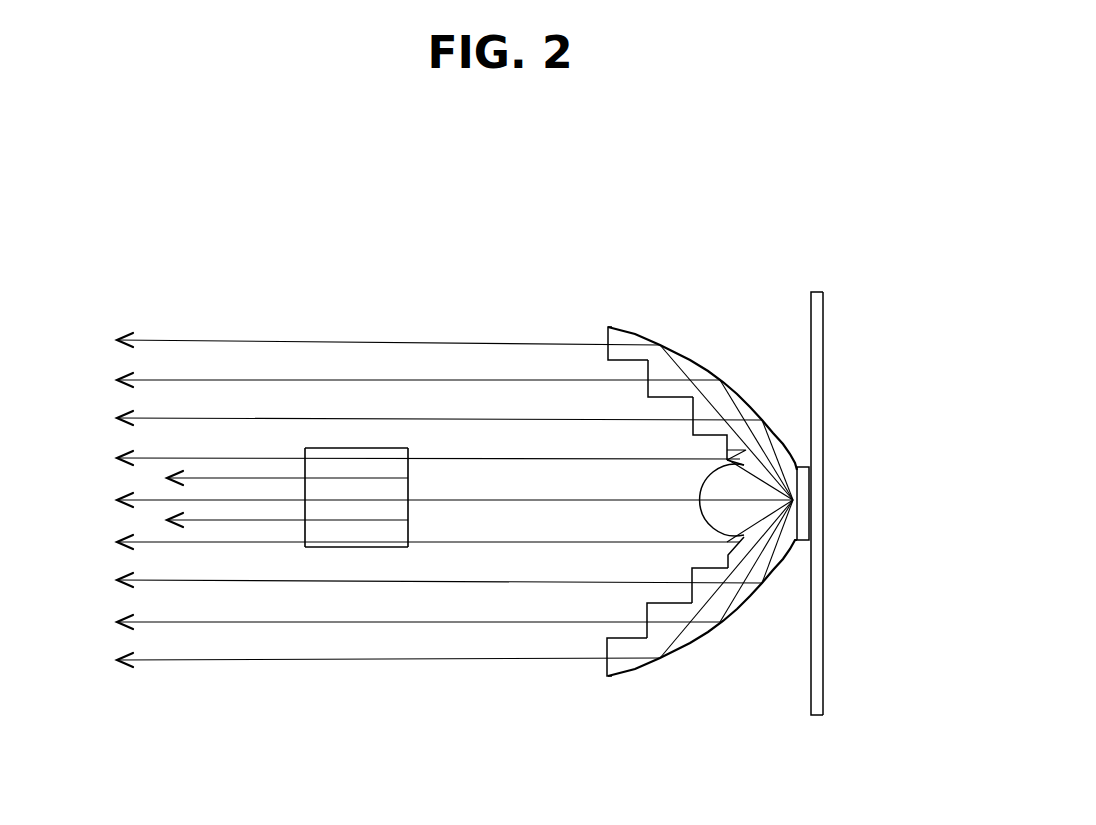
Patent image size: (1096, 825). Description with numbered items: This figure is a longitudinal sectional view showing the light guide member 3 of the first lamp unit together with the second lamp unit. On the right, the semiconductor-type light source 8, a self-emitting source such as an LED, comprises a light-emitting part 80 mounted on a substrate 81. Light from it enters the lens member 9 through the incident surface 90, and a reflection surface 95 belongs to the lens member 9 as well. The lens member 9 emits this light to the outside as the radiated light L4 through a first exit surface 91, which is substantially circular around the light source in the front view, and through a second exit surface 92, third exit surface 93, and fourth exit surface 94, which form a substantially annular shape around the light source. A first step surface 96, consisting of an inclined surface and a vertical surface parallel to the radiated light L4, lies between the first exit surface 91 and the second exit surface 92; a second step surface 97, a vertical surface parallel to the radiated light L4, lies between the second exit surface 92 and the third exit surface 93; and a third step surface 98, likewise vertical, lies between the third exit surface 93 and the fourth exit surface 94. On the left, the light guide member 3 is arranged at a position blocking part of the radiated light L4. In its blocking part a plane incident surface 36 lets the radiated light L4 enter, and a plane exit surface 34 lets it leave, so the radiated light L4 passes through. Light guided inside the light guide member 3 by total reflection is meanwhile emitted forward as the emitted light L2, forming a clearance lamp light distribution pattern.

The light guide member 3 is at (343, 440).
The plane exit surface 34 is at (306, 469).
The plane incident surface 36 is at (410, 467).
The semiconductor-type light source 8 is at (826, 272).
The light-emitting part 80 is at (810, 462).
The substrate 81 is at (825, 307).
The lens member 9 is at (699, 650).
The incident surface 90 is at (785, 548).
The first exit surface 91 is at (735, 450).
The second exit surface 92 is at (694, 575).
The third exit surface 93 is at (648, 610).
The fourth exit surface 94 is at (607, 641).
The reflection surface 95 is at (743, 597).
The first step surface 96 is at (710, 436).
The second step surface 97 is at (668, 397).
The third step surface 98 is at (608, 368).
The emitted light L2 is at (222, 478).
The radiated light L4 is at (140, 498).